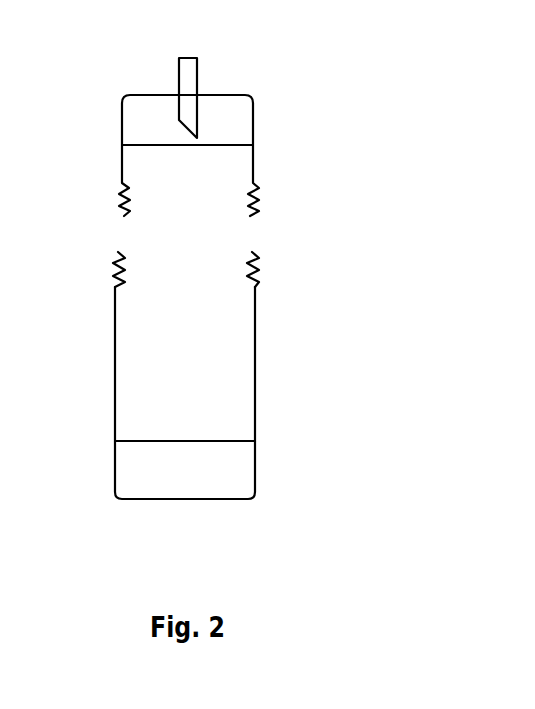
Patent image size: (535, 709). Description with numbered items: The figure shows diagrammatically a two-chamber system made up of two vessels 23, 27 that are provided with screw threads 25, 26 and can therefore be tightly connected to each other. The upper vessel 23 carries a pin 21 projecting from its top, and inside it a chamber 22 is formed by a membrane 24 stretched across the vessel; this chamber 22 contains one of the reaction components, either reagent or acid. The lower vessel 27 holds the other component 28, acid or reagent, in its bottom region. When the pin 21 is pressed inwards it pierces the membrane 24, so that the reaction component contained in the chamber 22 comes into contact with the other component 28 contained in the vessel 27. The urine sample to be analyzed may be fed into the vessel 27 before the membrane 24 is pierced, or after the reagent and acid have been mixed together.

The pin 21 is at (197, 70).
The chamber 22 is at (242, 113).
The vessel 23 is at (253, 165).
The membrane 24 is at (208, 147).
The screw thread 25 is at (125, 205).
The screw thread 26 is at (257, 263).
The vessel 27 is at (257, 345).
The other component 28 is at (238, 477).